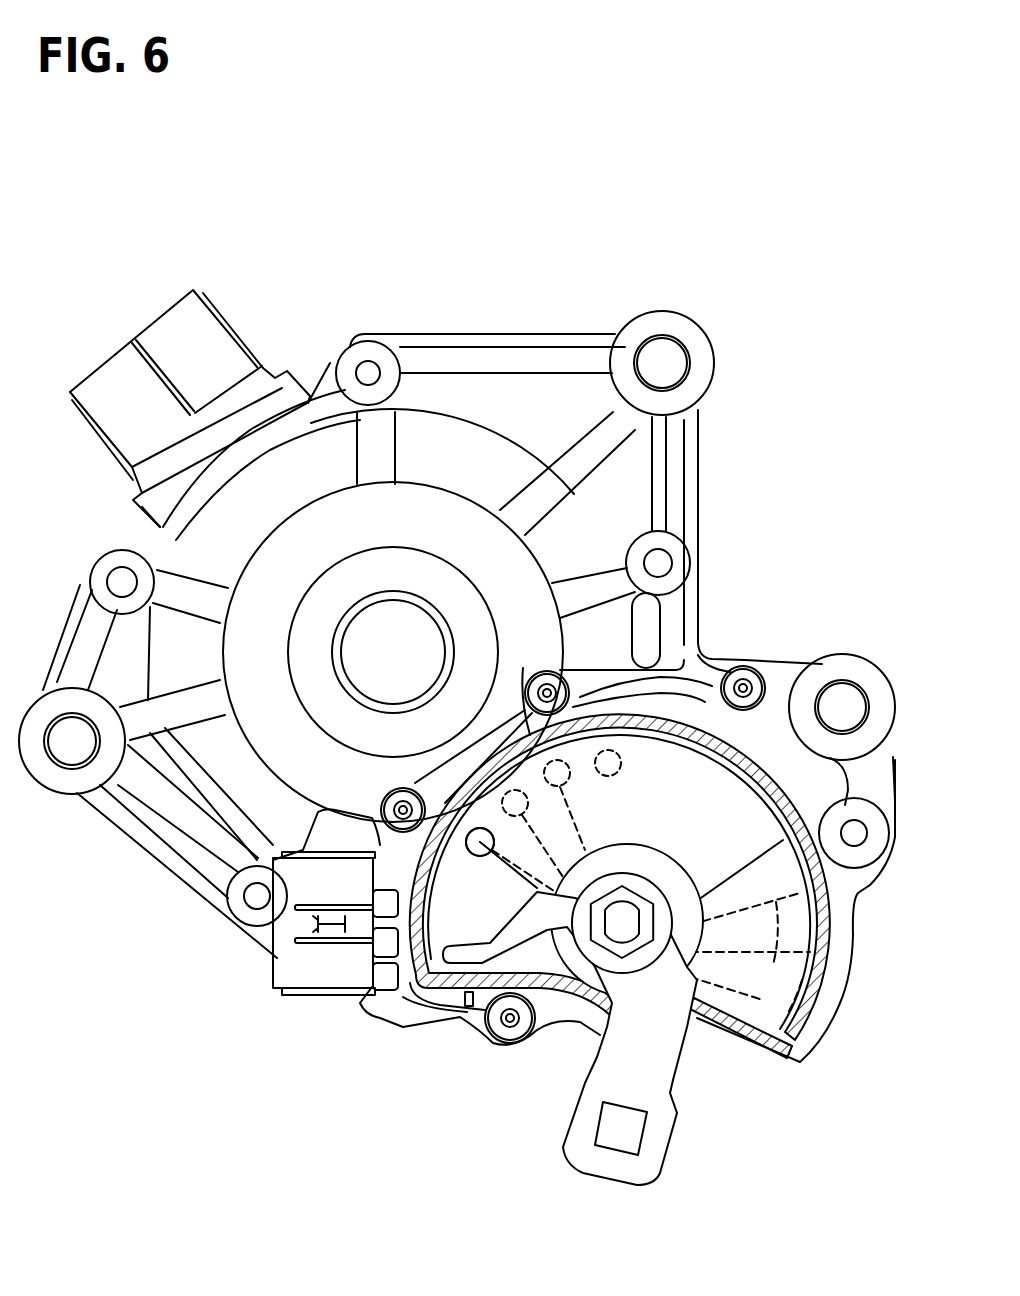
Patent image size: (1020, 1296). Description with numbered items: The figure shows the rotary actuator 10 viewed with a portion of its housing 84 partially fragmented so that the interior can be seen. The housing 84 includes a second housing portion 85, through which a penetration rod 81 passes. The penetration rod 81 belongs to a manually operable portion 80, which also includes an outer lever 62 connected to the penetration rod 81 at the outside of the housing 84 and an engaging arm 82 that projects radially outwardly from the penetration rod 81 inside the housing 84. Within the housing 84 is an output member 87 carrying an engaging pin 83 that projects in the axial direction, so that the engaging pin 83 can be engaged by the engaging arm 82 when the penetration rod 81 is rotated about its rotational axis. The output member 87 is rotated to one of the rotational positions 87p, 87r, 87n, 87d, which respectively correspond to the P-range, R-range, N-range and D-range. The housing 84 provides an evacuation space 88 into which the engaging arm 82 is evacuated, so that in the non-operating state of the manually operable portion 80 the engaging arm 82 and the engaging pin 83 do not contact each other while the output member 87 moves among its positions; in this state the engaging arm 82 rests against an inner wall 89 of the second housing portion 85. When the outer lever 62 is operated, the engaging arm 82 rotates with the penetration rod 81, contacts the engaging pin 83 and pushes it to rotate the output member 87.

The rotary actuator 10 is at (557, 295).
The housing 84 is at (409, 332).
The output member 87 is at (673, 896).
The rotational position 87p is at (792, 862).
The rotational position 87r is at (835, 937).
The rotational position 87n is at (815, 1000).
The rotational position 87d is at (790, 1050).
The second housing portion 85 is at (735, 1022).
The outer lever 62 is at (610, 1050).
The manually operable portion 80 is at (481, 1055).
The penetration rod 81 is at (512, 1025).
The engaging arm 82 is at (493, 957).
The engaging pin 83 is at (478, 845).
The evacuation space 88 is at (462, 920).
The inner wall 89 is at (470, 968).